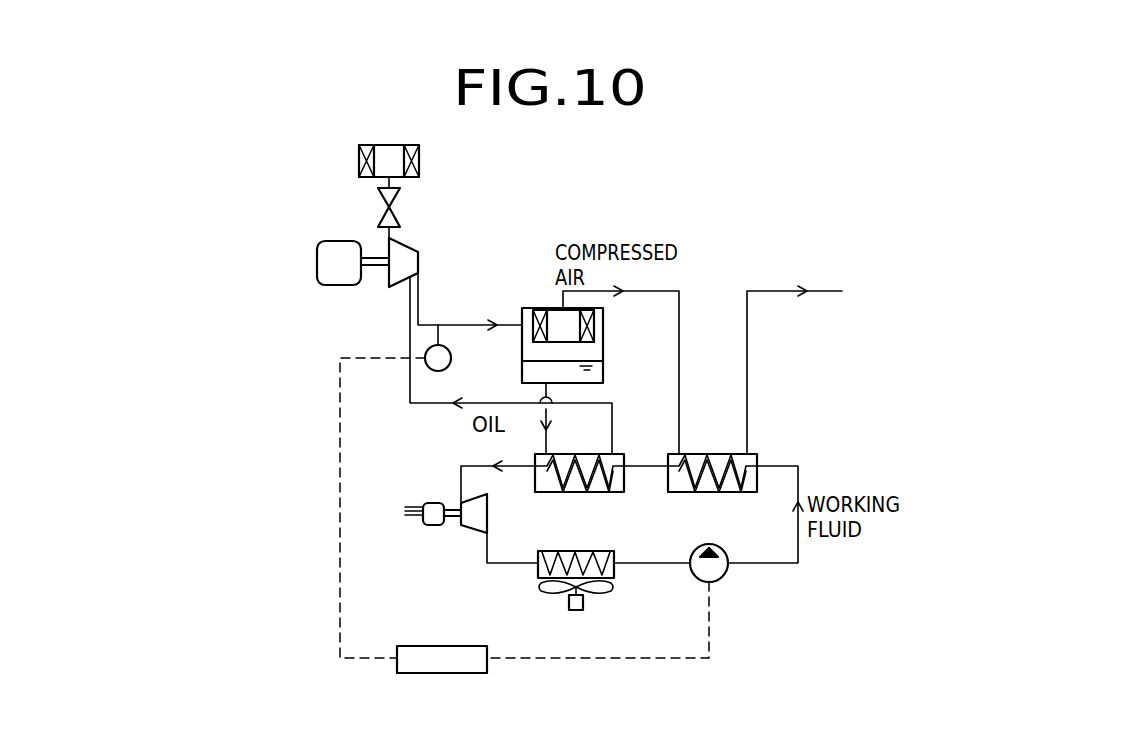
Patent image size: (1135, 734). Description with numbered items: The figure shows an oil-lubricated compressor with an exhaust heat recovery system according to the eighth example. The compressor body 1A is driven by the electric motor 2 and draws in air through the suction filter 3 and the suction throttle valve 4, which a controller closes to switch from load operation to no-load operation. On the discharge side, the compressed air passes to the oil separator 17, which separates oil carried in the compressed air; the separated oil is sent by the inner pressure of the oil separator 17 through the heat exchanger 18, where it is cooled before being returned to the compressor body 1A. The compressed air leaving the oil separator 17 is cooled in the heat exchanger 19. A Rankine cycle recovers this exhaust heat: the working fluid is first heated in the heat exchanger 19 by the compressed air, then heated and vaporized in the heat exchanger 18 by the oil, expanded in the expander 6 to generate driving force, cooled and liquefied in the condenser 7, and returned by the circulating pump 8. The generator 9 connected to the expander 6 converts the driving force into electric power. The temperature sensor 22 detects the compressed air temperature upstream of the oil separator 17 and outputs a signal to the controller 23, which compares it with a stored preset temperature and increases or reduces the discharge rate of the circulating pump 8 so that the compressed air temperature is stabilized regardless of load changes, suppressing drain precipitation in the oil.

The compressor body 1A is at (418, 262).
The electric motor 2 is at (345, 241).
The suction filter 3 is at (419, 162).
The suction throttle valve 4 is at (400, 212).
The expander 6 is at (470, 529).
The condenser 7 is at (570, 551).
The circulating pump 8 is at (714, 545).
The generator 9 is at (431, 525).
The oil separator 17 is at (603, 342).
The heat exchanger 18 is at (573, 453).
The heat exchanger 19 is at (703, 454).
The temperature sensor 22 is at (451, 358).
The controller 23 is at (443, 646).